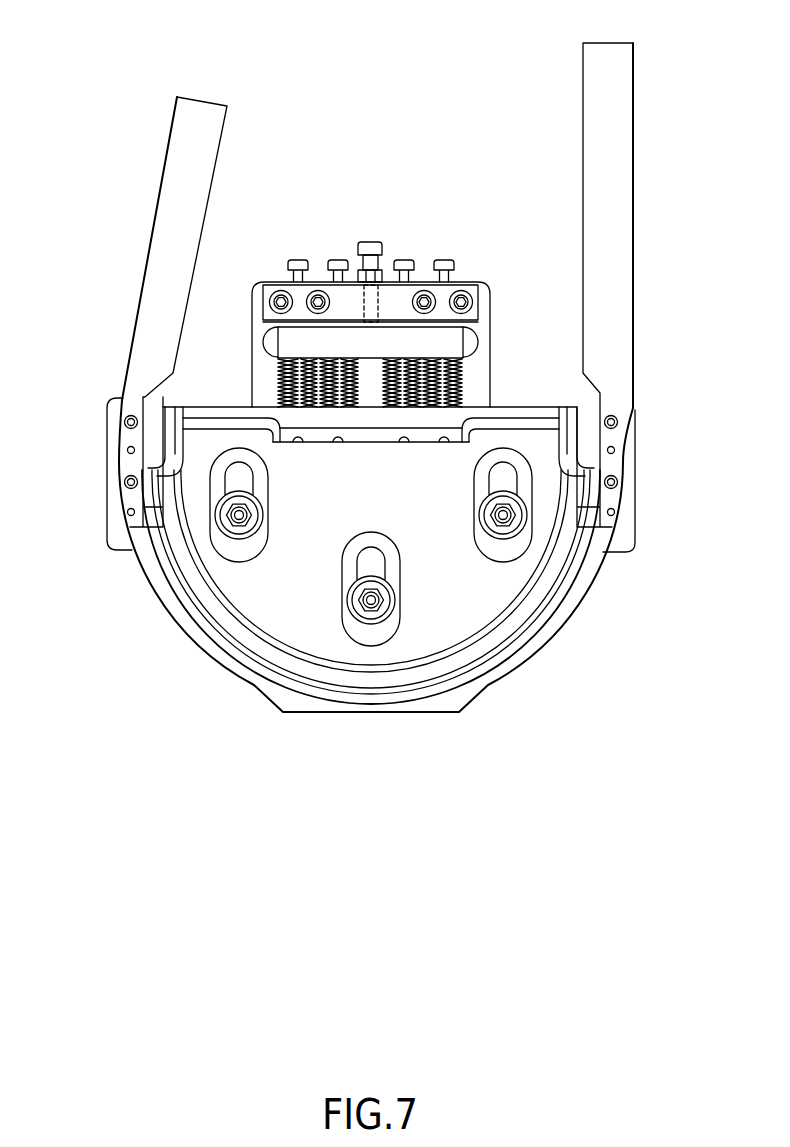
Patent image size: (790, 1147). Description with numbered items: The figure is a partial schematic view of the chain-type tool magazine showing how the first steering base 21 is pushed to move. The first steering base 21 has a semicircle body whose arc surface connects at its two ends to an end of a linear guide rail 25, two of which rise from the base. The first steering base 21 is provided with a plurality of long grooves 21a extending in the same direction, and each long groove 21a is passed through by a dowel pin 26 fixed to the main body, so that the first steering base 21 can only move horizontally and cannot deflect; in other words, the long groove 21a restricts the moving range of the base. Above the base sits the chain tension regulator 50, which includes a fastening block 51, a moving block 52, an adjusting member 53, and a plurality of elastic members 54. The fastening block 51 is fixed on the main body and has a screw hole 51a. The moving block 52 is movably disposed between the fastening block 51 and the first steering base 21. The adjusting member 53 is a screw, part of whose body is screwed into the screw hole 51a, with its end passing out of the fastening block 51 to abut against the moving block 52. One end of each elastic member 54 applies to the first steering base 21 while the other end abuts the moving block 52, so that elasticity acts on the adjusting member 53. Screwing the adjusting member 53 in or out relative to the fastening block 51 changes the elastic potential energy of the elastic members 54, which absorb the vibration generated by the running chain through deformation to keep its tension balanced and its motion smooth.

The first steering base 21 is at (267, 617).
The long groove 21a is at (387, 560).
The linear guide rail 25 is at (180, 135).
The dowel pin 26 is at (387, 605).
The chain tension regulator 50 is at (302, 226).
The fastening block 51 is at (276, 296).
The screw hole 51a is at (405, 298).
The moving block 52 is at (455, 343).
The adjusting member 53 is at (373, 240).
The elastic member 54 is at (277, 373).